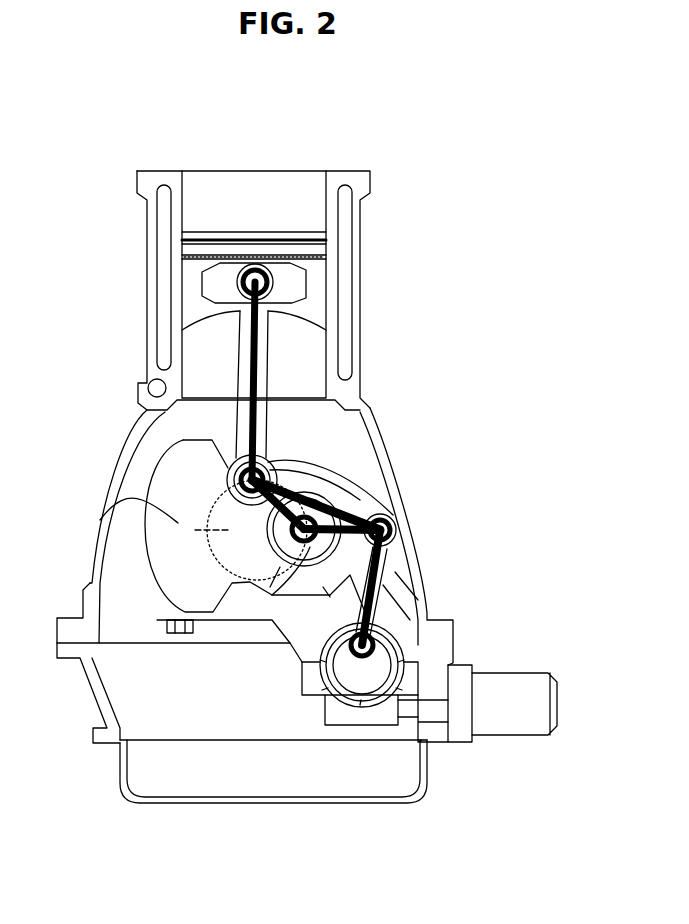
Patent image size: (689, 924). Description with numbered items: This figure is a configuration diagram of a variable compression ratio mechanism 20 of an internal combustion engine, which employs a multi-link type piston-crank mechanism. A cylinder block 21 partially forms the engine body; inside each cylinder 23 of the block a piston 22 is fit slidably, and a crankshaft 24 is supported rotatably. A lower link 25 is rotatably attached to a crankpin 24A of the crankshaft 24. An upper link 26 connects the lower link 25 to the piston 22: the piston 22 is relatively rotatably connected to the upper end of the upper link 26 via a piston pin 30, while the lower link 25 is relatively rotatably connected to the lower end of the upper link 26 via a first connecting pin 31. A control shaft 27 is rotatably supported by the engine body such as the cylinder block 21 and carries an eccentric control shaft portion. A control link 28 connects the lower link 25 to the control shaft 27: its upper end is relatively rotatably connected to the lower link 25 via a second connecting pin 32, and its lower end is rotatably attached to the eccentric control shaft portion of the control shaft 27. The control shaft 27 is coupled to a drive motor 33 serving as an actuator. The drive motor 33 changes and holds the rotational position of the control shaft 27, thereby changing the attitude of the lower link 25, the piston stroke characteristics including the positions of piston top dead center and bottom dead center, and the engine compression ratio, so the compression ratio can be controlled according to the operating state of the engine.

The variable compression ratio mechanism 20 is at (410, 233).
The cylinder block 21 is at (353, 185).
The piston 22 is at (193, 278).
The cylinder 23 is at (185, 197).
The crankshaft 24 is at (177, 493).
The crankpin 24A is at (310, 547).
The lower link 25 is at (327, 493).
The upper link 26 is at (242, 353).
The control shaft 27 is at (373, 660).
The control link 28 is at (383, 586).
The piston pin 30 is at (256, 266).
The first connecting pin 31 is at (248, 487).
The second connecting pin 32 is at (390, 522).
The drive motor 33 is at (488, 686).